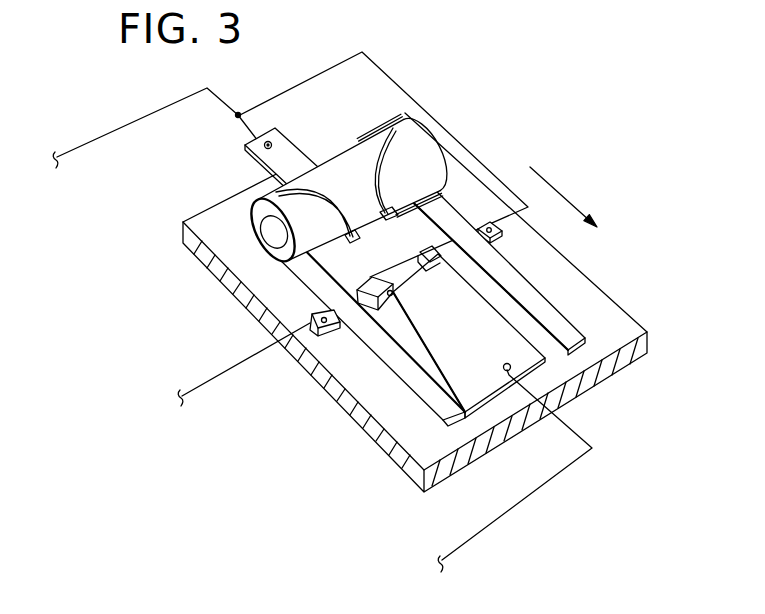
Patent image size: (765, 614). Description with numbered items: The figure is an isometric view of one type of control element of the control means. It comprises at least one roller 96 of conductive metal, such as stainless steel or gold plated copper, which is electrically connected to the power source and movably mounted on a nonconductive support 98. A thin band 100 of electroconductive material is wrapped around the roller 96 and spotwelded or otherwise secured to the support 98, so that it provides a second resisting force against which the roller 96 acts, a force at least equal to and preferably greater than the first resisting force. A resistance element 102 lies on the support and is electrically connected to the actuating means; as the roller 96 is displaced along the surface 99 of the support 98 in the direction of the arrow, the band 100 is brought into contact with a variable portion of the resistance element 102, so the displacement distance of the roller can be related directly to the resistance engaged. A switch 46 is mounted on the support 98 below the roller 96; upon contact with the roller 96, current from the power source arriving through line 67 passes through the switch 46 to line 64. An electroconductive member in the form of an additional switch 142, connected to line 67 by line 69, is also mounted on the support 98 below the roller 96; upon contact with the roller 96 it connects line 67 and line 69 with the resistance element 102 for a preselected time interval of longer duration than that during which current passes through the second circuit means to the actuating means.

The switch 46 is at (377, 288).
The line 64 is at (242, 364).
The line 67 is at (222, 92).
The line 69 is at (392, 79).
The roller 96 is at (415, 145).
The nonconductive support 98 is at (182, 230).
The surface 99 is at (200, 260).
The thin band 100 is at (363, 158).
The resistance element 102 is at (472, 338).
The additional switch 142 is at (420, 268).